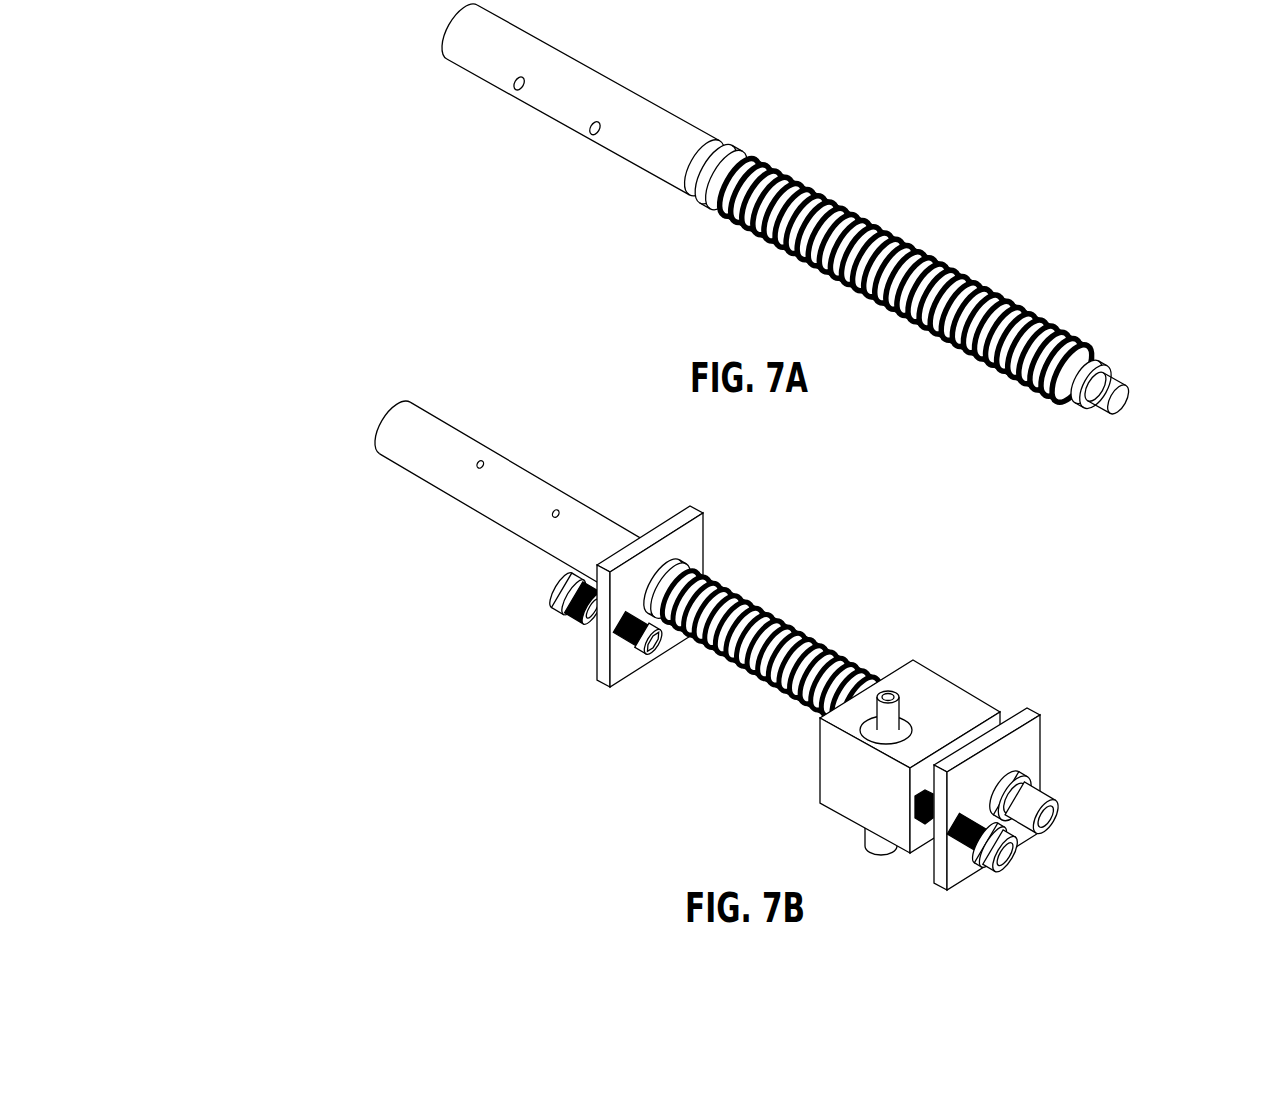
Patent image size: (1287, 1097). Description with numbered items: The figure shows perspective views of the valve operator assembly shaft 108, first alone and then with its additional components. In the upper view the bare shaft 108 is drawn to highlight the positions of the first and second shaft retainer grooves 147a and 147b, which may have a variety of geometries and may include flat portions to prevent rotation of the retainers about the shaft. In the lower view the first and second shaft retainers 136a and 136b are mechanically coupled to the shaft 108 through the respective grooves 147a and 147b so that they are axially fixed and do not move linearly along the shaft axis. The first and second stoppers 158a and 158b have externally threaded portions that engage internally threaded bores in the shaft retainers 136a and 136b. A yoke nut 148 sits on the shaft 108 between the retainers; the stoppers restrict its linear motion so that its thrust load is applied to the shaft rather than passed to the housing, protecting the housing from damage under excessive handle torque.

In FIG. 7A, the shaft 108 is at (888, 282).
In FIG. 7B, the shaft 108 is at (769, 694).
In FIG. 7A, the first shaft retainer groove 147a is at (752, 178).
In FIG. 7A, the second shaft retainer groove 147b is at (1071, 352).
In FIG. 7B, the first shaft retainer 136a is at (690, 552).
In FIG. 7B, the second shaft retainer 136b is at (1016, 748).
In FIG. 7B, the yoke nut 148 is at (830, 795).
In FIG. 7B, the first stopper 158a is at (555, 612).
In FIG. 7B, the second stopper 158b is at (1013, 849).